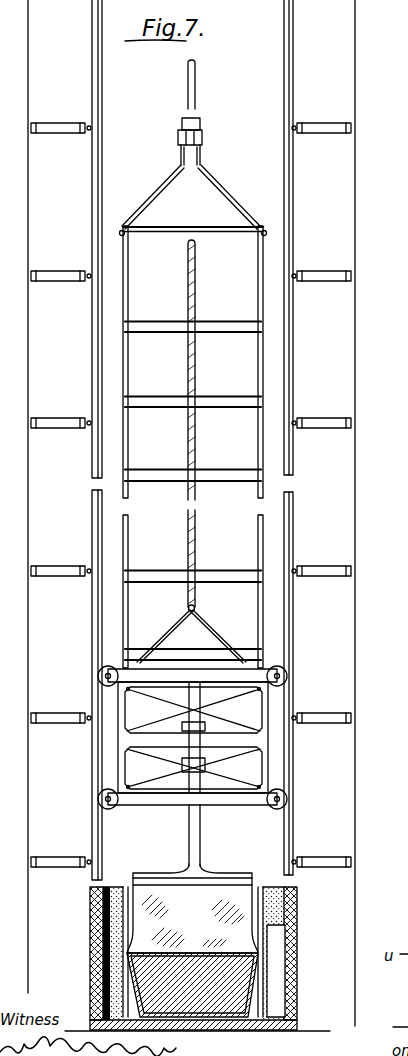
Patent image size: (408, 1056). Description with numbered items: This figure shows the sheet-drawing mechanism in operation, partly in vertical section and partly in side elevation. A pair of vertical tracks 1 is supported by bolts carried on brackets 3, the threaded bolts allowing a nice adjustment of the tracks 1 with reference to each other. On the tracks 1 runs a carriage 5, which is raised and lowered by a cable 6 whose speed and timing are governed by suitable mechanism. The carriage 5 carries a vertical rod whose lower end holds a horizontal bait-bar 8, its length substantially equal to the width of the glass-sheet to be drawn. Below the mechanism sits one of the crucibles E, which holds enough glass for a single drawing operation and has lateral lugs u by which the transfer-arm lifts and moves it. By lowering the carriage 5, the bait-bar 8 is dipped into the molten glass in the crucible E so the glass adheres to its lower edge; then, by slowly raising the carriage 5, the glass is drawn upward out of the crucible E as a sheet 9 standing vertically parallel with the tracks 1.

The vertical tracks 1 is at (92, 359).
The brackets 3 is at (322, 568).
The carriage 5 is at (118, 750).
The cable 6 is at (189, 440).
The bait-bar 8 is at (213, 876).
The sheet 9 is at (192, 919).
The lateral lugs u is at (90, 969).
The crucibles E is at (258, 988).